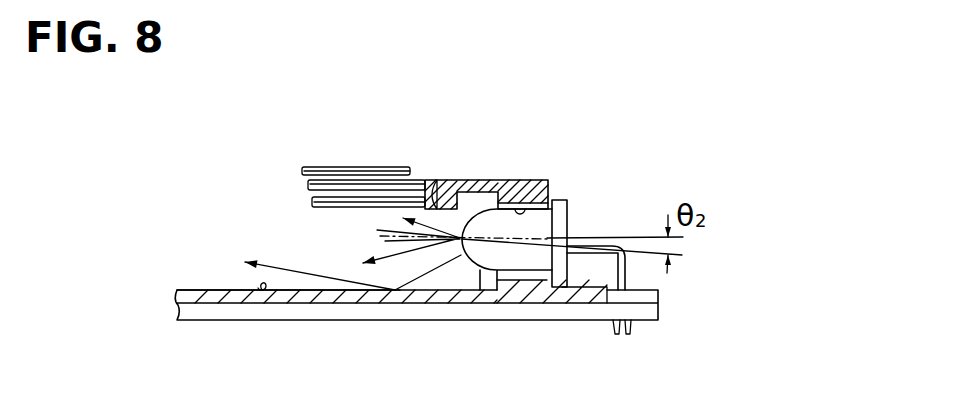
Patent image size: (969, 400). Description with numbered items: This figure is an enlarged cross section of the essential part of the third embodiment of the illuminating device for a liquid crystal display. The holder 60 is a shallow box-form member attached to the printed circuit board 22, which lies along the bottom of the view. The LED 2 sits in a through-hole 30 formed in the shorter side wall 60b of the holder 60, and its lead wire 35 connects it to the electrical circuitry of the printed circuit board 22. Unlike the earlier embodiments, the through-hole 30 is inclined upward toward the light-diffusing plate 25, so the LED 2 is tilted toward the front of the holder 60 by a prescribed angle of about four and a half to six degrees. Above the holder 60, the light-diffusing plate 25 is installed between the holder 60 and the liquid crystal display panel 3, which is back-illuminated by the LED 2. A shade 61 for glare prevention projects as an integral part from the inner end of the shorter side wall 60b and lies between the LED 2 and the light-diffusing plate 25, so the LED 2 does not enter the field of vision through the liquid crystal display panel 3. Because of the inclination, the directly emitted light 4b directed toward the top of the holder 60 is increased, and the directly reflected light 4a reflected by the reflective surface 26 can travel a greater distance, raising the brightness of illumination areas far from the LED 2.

The LED 2 is at (483, 261).
The liquid crystal display panel 3 is at (358, 166).
The directly reflected light 4a is at (315, 281).
The directly emitted light 4b is at (440, 227).
The printed circuit board 22 is at (393, 321).
The light-diffusing plate 25 is at (300, 188).
The reflective surface 26 is at (262, 292).
The through-hole 30 is at (507, 181).
The lead wire 35 is at (626, 285).
The holder 60 is at (212, 281).
The shorter side wall 60b is at (526, 203).
The shade 61 is at (462, 179).